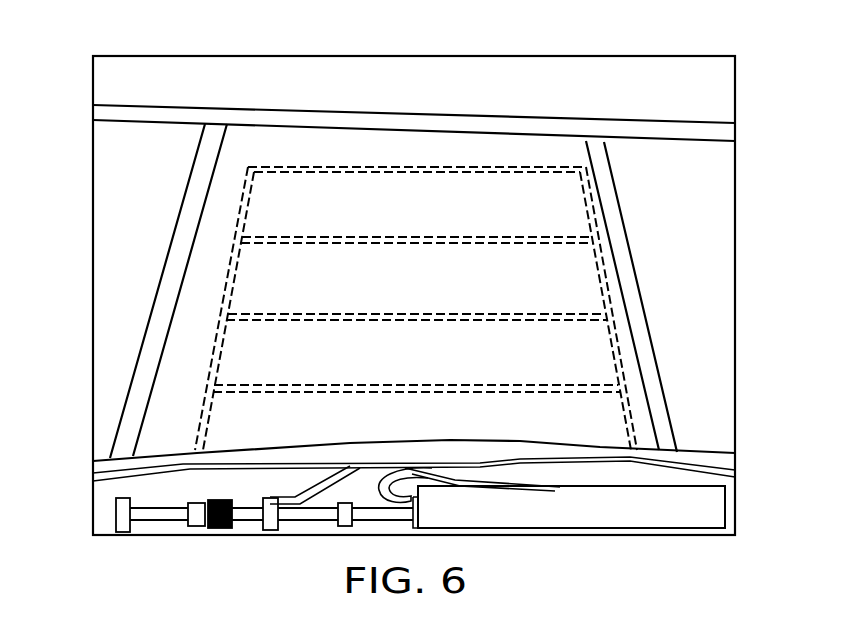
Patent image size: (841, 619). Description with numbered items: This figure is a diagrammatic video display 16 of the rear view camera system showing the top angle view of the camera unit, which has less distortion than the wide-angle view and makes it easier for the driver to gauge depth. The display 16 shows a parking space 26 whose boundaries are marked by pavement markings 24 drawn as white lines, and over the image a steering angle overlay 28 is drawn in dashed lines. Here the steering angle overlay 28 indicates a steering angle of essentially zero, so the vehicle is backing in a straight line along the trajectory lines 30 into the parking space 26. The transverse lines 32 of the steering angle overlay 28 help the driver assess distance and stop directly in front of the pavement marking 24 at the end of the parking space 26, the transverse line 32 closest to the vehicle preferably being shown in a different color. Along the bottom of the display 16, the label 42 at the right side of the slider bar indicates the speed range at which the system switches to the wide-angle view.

The display 16 is at (130, 82).
The pavement marking 24 is at (625, 128).
The parking space 26 is at (283, 150).
The steering angle overlay 28 is at (213, 270).
The trajectory lines 30 is at (607, 272).
The transverse lines 32 is at (578, 384).
The label 42 is at (697, 493).